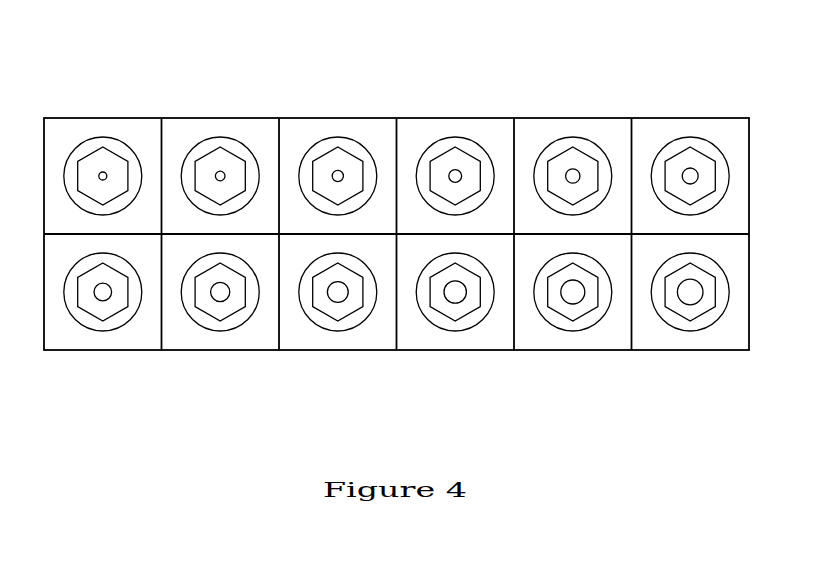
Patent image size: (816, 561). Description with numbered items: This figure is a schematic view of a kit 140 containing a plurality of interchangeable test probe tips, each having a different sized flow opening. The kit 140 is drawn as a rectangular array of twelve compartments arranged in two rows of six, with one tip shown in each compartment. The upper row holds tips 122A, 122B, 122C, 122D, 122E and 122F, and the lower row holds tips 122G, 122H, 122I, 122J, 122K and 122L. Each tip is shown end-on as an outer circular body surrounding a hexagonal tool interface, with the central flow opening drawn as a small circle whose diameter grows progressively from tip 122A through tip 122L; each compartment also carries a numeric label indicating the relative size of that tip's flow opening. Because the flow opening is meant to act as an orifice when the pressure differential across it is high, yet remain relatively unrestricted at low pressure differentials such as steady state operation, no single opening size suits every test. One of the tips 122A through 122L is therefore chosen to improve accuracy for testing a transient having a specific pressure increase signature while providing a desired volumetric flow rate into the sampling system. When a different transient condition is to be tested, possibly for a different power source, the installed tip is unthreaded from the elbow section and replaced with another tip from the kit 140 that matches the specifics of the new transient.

The kit 140 is at (421, 74).
The tip 122A is at (124, 143).
The tip 122B is at (241, 143).
The tip 122C is at (359, 143).
The tip 122D is at (476, 143).
The tip 122E is at (594, 143).
The tip 122F is at (711, 143).
The tip 122G is at (125, 326).
The tip 122H is at (242, 326).
The tip 122I is at (360, 326).
The tip 122J is at (477, 326).
The tip 122K is at (595, 326).
The tip 122L is at (712, 326).